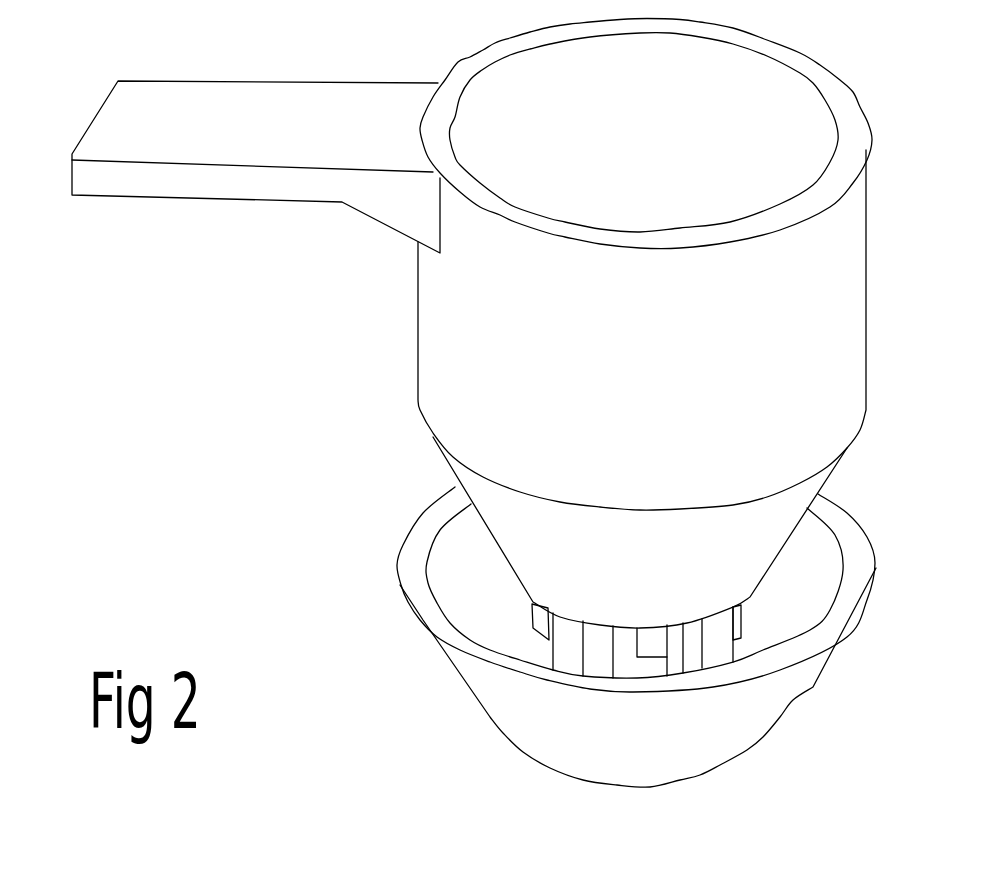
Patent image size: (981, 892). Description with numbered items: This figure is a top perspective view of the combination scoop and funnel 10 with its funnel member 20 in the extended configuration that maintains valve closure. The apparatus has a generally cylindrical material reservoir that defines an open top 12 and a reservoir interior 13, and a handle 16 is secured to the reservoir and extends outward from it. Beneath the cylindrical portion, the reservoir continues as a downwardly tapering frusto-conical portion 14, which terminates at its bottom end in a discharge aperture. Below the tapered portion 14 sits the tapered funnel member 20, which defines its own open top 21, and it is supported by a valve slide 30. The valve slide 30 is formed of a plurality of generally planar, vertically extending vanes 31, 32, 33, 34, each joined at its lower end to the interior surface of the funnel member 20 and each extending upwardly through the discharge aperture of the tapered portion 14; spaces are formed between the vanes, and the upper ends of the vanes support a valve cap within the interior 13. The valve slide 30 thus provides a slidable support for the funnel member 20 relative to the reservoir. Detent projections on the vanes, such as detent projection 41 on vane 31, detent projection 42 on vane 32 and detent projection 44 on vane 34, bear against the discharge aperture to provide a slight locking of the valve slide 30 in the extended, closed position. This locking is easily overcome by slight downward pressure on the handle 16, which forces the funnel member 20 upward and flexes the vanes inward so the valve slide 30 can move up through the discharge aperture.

The combination scoop and funnel 10 is at (298, 299).
The open top 12 is at (838, 92).
The reservoir interior 13 is at (815, 158).
The frusto-conical portion 14 is at (507, 517).
The handle 16 is at (243, 104).
The funnel member 20 is at (390, 628).
The open top 21 is at (840, 516).
The valve slide 30 is at (768, 634).
The vane 31 is at (625, 670).
The vane 32 is at (547, 652).
The vane 33 is at (732, 786).
The vane 34 is at (720, 652).
The detent projection 41 is at (650, 645).
The detent projection 42 is at (537, 618).
The detent projection 44 is at (742, 618).